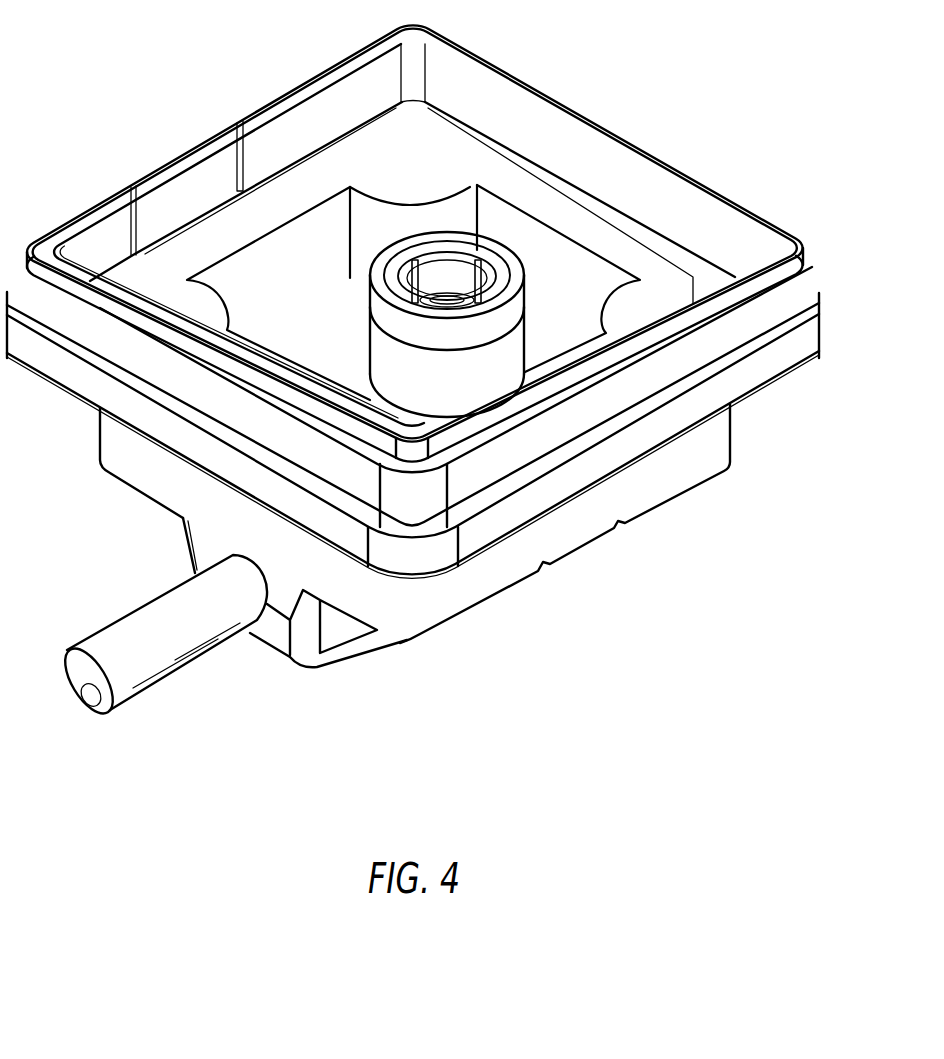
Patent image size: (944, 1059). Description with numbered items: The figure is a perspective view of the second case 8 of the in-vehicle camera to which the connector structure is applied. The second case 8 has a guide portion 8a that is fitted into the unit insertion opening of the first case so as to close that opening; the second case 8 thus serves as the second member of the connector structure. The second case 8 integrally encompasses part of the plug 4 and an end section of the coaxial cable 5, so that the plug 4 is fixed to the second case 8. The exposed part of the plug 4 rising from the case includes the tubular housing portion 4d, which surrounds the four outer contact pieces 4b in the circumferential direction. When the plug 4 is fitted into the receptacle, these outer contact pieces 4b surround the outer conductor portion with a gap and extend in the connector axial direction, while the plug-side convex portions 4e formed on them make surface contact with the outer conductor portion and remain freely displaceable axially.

The plug 4 is at (511, 210).
The outer contact pieces 4b is at (500, 287).
The tubular housing portion 4d is at (398, 242).
The plug-side convex portions 4e is at (450, 277).
The coaxial cable 5 is at (195, 678).
The second case 8 is at (483, 618).
The guide portion 8a is at (302, 107).